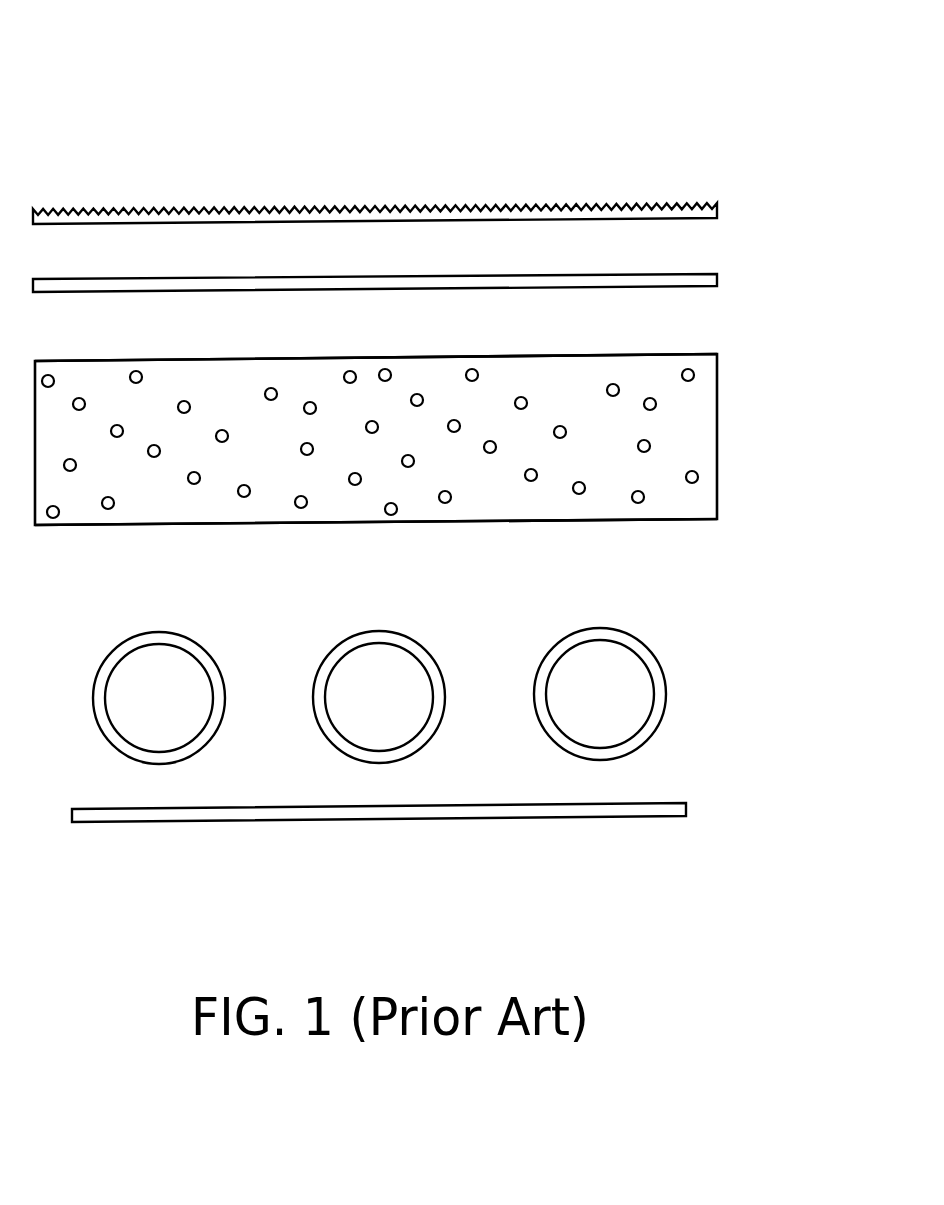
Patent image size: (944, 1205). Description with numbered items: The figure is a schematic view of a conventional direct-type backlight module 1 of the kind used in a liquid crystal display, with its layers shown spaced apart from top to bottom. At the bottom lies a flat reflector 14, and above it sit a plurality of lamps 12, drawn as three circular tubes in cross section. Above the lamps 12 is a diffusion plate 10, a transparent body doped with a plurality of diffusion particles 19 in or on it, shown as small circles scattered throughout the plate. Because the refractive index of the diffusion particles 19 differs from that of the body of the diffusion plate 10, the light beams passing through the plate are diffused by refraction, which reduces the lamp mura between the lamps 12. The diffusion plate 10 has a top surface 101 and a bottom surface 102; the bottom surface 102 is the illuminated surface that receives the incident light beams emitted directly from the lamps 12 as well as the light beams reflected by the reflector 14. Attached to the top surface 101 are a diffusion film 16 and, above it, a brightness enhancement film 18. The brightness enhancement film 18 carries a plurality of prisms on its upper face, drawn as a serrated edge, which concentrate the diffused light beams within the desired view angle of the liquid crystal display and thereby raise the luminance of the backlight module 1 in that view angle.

The direct-type backlight module 1 is at (722, 146).
The brightness enhancement film 18 is at (717, 205).
The diffusion film 16 is at (717, 277).
The diffusion plate 10 is at (695, 418).
The top surface 101 is at (673, 353).
The bottom surface 102 is at (660, 520).
The diffusion particles 19 is at (698, 475).
The lamps 12 is at (662, 693).
The reflector 14 is at (686, 806).